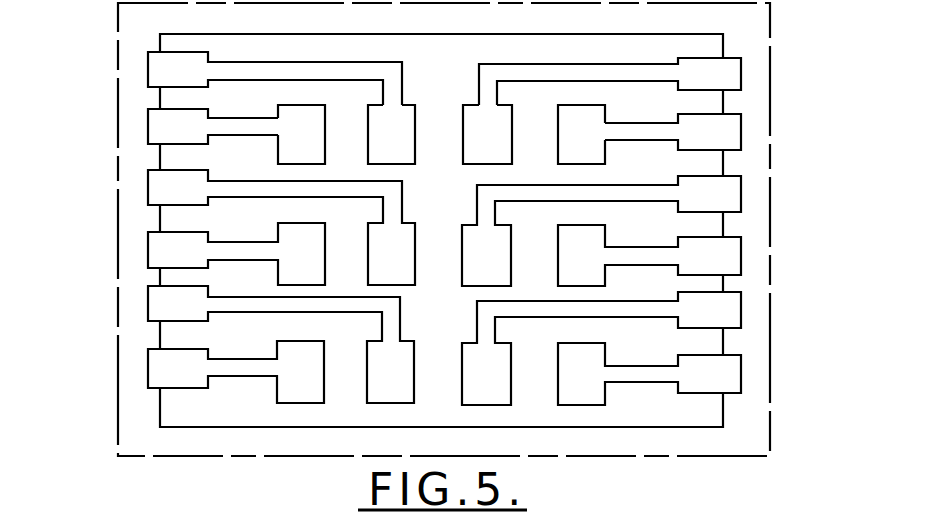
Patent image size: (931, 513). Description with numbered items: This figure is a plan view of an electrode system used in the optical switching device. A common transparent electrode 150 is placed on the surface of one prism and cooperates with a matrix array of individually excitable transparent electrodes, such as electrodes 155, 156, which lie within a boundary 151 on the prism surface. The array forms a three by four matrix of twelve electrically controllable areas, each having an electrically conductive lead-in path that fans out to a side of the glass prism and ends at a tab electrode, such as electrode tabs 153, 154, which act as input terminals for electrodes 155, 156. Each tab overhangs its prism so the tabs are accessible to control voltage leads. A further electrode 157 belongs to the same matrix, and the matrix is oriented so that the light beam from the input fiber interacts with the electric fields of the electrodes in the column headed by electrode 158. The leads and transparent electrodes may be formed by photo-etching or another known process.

The common transparent electrode 150 is at (118, 18).
The circuit area boundary 151 is at (724, 41).
The input terminal 153 is at (148, 70).
The input terminal 154 is at (148, 130).
The transparent electrode 155 is at (415, 112).
The transparent electrode 156 is at (280, 148).
The electrode square 157 is at (462, 147).
The electrode 158 is at (594, 112).